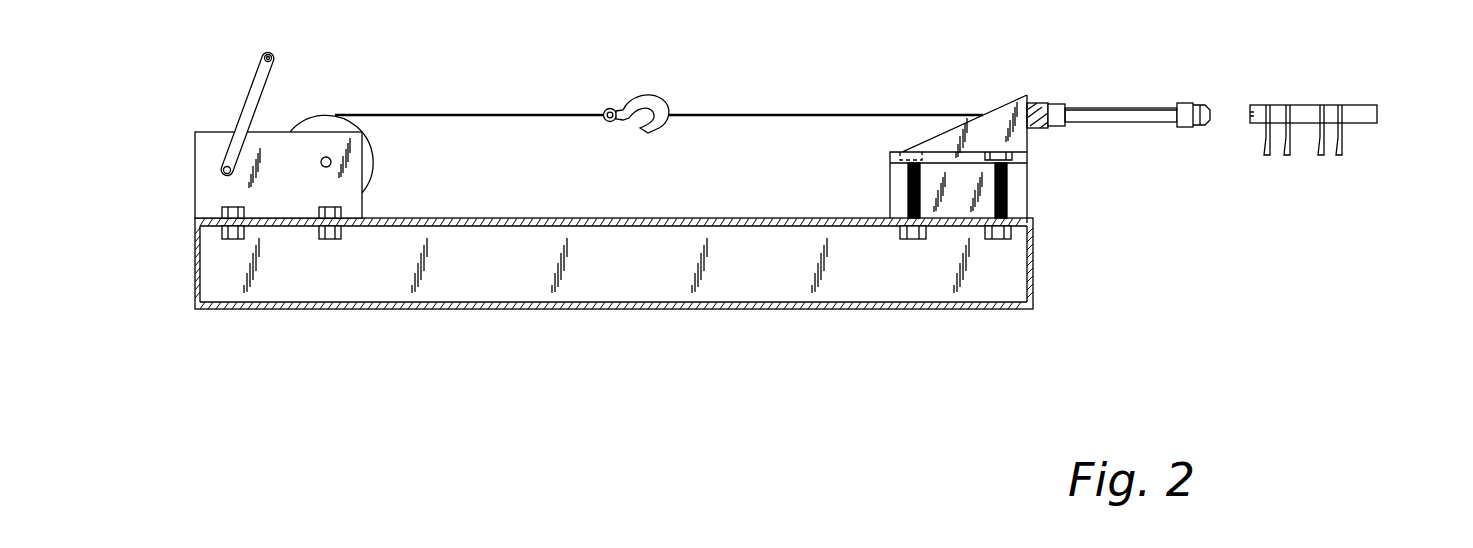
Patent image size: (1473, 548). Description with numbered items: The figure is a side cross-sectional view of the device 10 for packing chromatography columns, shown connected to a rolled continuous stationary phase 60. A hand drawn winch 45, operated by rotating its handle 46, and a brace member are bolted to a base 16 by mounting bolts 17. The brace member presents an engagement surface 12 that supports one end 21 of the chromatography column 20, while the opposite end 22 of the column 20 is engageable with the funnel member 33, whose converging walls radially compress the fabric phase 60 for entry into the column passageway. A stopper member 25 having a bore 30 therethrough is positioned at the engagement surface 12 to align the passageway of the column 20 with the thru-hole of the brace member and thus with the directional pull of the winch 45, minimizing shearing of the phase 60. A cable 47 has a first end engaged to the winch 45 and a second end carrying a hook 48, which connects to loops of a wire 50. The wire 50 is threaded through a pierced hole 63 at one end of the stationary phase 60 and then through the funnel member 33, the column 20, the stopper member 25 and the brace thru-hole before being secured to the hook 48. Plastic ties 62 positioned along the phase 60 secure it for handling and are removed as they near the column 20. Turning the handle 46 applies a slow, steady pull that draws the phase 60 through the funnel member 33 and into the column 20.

The device 10 is at (1082, 313).
The engagement surface 12 is at (1030, 167).
The base 16 is at (708, 309).
The mounting bolts 17 is at (222, 237).
The chromatography column 20 is at (1140, 122).
The end of column 21 is at (1092, 108).
The end of column 22 is at (1170, 104).
The stopper member 25 is at (1055, 103).
The bore 30 is at (1045, 122).
The funnel member 33 is at (1200, 104).
The hand drawn winch 45 is at (195, 180).
The handle 46 is at (277, 75).
The cable 47 is at (536, 113).
The hook 48 is at (645, 97).
The wire 50 is at (868, 113).
The continuous stationary phase 60 is at (1380, 112).
The plastic ties 62 is at (1320, 156).
The pierced hole 63 is at (1252, 124).